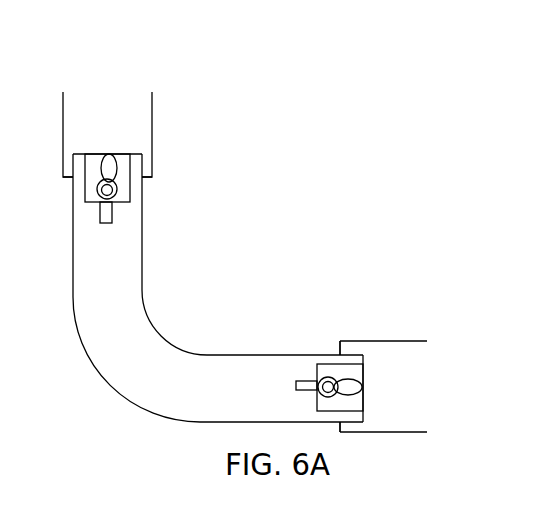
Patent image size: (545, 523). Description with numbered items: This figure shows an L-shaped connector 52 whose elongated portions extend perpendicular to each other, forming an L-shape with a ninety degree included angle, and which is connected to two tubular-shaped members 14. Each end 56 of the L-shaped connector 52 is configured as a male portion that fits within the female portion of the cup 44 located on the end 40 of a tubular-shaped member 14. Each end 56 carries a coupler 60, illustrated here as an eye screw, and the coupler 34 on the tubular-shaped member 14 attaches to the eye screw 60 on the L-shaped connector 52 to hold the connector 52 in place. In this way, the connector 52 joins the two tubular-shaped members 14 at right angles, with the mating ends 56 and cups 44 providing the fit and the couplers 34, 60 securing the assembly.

The tubular-shaped member 14 is at (136, 78).
The coupler 34 is at (108, 157).
The end 40 is at (70, 178).
The cup 44 is at (135, 157).
The L-shaped connector 52 is at (310, 136).
The end 56 is at (78, 155).
The coupler 60 is at (118, 192).